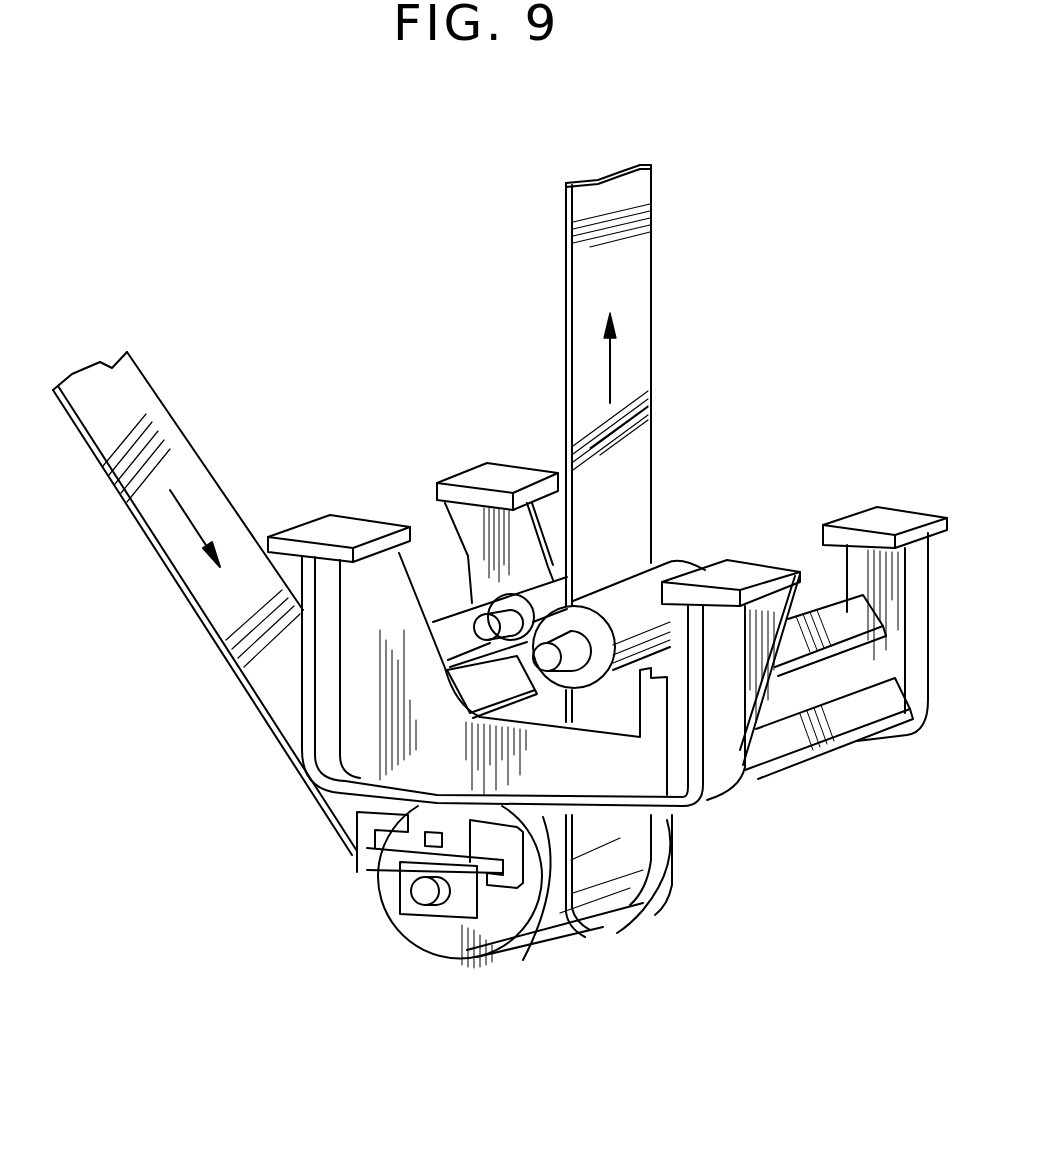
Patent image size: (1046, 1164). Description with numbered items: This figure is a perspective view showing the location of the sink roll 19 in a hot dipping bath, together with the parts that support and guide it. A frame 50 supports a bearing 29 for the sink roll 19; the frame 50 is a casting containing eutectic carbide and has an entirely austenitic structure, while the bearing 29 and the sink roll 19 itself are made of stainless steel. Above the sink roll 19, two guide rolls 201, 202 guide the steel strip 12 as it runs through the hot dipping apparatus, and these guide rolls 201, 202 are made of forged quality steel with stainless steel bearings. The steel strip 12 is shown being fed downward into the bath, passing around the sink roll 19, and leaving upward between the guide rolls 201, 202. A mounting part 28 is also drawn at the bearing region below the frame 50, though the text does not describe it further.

The steel strip 12 is at (633, 272).
The sink roll 19 is at (509, 947).
The guide roll 201 is at (670, 590).
The guide roll 202 is at (515, 585).
The bracket 28 is at (427, 905).
The bearing 29 is at (410, 893).
The frame 50 is at (327, 703).